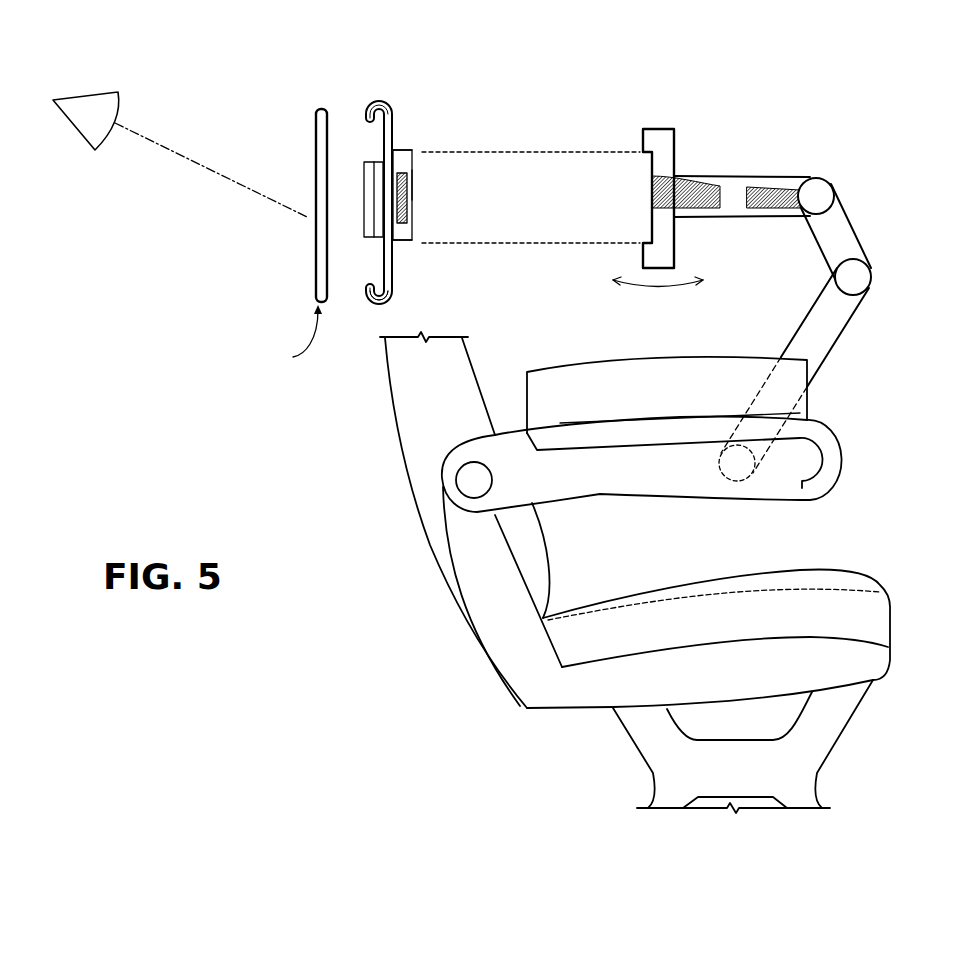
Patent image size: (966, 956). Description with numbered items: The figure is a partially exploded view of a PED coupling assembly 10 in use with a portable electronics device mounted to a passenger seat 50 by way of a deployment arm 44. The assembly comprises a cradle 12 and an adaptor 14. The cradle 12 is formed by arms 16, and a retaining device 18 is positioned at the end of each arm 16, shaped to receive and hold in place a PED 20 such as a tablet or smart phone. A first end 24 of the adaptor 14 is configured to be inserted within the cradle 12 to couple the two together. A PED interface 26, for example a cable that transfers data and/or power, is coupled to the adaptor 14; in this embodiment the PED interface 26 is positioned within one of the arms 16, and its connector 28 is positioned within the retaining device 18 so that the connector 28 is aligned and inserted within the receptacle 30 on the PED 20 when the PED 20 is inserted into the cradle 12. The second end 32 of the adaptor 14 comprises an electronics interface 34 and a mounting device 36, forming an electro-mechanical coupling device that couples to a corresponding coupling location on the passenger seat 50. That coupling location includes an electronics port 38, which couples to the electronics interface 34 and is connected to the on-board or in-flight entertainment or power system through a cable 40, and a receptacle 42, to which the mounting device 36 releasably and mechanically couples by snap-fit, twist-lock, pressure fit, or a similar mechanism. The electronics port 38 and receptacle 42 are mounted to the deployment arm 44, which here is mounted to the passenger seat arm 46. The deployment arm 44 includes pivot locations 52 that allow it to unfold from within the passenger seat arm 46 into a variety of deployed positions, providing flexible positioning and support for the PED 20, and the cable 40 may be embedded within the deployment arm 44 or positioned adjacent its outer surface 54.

The PED coupling assembly 10 is at (416, 281).
The cradle 12 is at (386, 100).
The adaptor 14 is at (392, 132).
The arm 16 is at (403, 148).
The retaining device 18 is at (370, 104).
The PED 20 is at (317, 298).
The first end 24 is at (405, 152).
The PED interface 26 is at (412, 188).
The connector 28 is at (377, 308).
The receptacle 30 is at (292, 339).
The second end 32 is at (410, 160).
The electronics interface 34 is at (412, 220).
The mounting device 36 is at (405, 242).
The electronics port 38 is at (653, 205).
The cable 40 is at (700, 208).
The receptacle 42 is at (675, 143).
The deployment arm 44 is at (842, 233).
The passenger seat arm 46 is at (620, 472).
The passenger seat 50 is at (515, 657).
The pivot locations 52 is at (813, 178).
The outer surface 54 is at (827, 340).